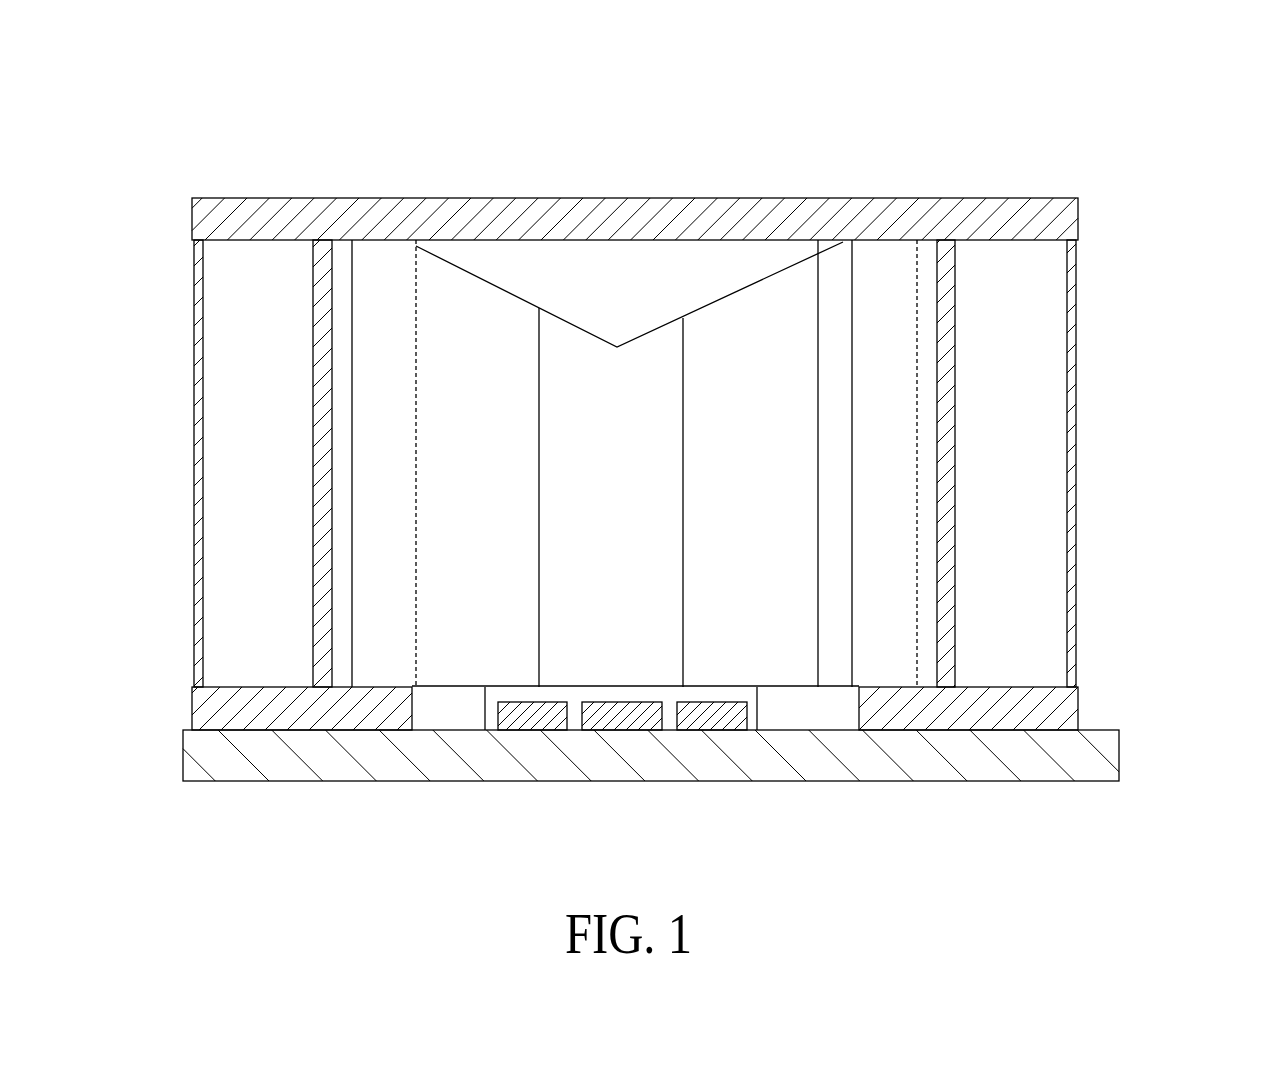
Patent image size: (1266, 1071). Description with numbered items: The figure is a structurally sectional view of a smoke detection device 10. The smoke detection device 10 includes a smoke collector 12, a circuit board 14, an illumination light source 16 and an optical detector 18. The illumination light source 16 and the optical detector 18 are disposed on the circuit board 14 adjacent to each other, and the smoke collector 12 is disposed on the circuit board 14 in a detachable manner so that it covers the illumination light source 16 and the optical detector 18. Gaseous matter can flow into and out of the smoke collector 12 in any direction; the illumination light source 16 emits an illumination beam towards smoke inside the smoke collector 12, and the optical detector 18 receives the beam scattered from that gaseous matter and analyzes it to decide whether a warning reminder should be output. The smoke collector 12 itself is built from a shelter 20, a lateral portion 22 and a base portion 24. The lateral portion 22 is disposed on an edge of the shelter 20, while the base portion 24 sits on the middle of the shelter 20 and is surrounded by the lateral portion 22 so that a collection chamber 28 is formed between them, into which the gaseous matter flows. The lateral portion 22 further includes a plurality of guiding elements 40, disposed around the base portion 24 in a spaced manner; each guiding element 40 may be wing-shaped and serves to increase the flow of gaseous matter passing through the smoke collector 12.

The smoke detection device 10 is at (1166, 125).
The smoke collector 12 is at (690, 238).
The circuit board 14 is at (282, 762).
The illumination light source 16 is at (530, 718).
The optical detector 18 is at (620, 718).
The shelter 20 is at (272, 198).
The lateral portion 22 is at (197, 378).
The base portion 24 is at (556, 260).
The collection chamber 28 is at (481, 601).
The guiding element 40 is at (388, 265).